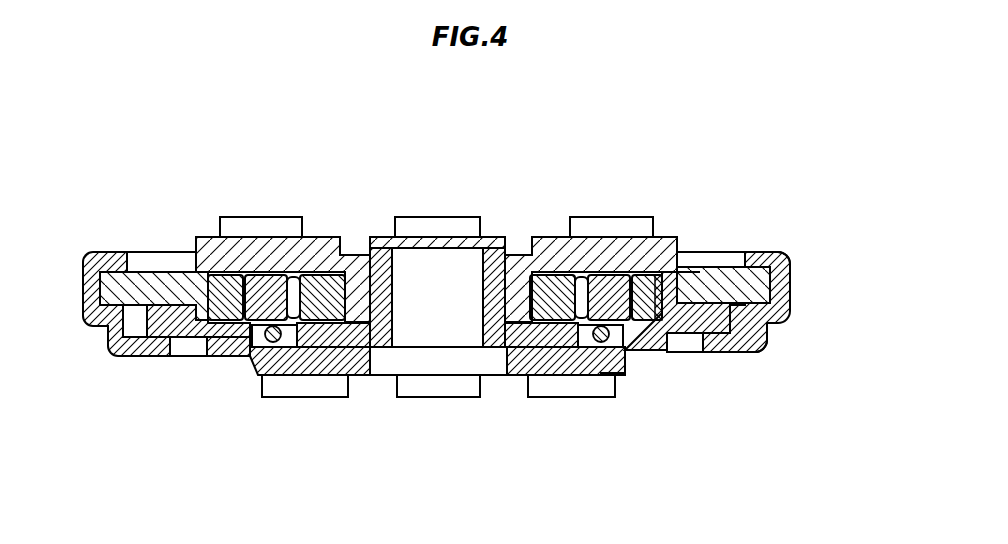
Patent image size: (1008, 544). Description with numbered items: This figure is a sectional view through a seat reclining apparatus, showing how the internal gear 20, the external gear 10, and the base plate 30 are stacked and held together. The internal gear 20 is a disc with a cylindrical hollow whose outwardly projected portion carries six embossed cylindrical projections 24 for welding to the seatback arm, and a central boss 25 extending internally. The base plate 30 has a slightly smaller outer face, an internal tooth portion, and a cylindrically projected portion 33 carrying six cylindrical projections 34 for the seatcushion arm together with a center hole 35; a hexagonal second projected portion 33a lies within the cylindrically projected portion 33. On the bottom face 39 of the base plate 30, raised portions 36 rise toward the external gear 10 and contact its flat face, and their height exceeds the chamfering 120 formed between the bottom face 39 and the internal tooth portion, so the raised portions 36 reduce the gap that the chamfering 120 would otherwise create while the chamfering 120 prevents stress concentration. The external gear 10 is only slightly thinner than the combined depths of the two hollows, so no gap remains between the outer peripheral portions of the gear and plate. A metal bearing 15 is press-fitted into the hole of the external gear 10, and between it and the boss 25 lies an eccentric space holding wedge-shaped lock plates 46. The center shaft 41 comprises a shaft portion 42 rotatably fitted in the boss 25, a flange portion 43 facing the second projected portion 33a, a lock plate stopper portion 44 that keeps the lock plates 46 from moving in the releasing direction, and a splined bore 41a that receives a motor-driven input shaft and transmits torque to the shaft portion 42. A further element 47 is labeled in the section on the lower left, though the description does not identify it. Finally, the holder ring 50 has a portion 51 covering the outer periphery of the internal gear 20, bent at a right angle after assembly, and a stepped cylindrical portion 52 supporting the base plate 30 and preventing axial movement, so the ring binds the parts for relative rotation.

The external gear 10 is at (690, 290).
The metal bearing 15 is at (580, 270).
The internal gear 20 is at (613, 237).
The cylindrical projections 24 is at (260, 217).
The boss 25 is at (518, 345).
The base plate 30 is at (580, 375).
The cylindrically projected portion 33 is at (640, 358).
The second projected portion 33a is at (620, 375).
The cylindrical projections 34 is at (427, 217).
The center hole 35 is at (384, 352).
The raised portions 36 is at (212, 237).
The bottom face 39 is at (667, 237).
The center shaft 41 is at (495, 237).
The splined bore 41a is at (478, 335).
The shaft portion 42 is at (378, 237).
The flange portion 43 is at (362, 337).
The lock plate stopper portion 44 is at (295, 237).
The lock plates 46 is at (323, 237).
The ball 47 is at (253, 375).
The holder ring 50 is at (792, 278).
The portion 51 is at (770, 253).
The portion 52 is at (742, 356).
The chamfering 120 is at (694, 237).